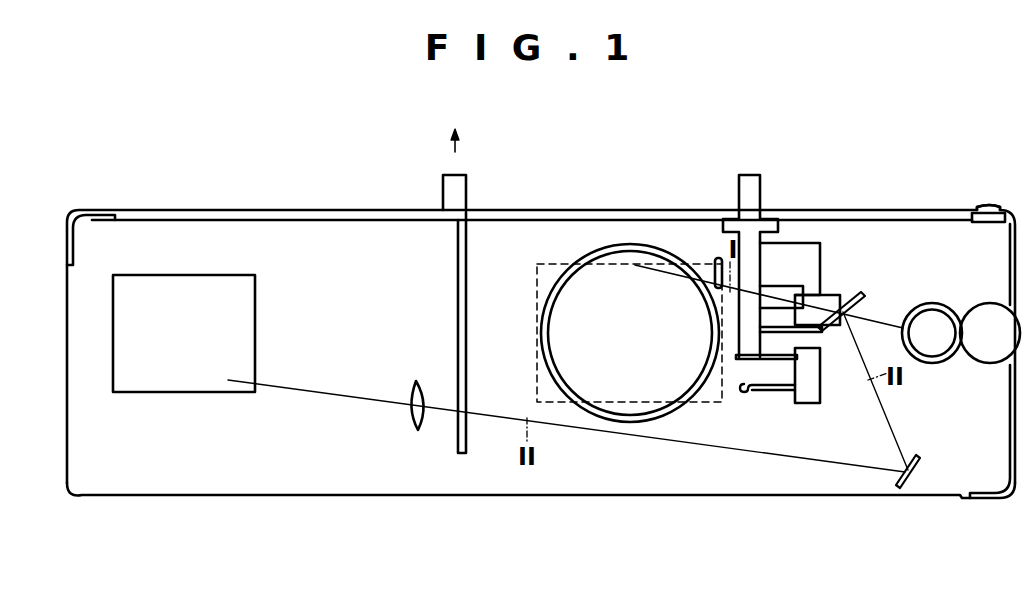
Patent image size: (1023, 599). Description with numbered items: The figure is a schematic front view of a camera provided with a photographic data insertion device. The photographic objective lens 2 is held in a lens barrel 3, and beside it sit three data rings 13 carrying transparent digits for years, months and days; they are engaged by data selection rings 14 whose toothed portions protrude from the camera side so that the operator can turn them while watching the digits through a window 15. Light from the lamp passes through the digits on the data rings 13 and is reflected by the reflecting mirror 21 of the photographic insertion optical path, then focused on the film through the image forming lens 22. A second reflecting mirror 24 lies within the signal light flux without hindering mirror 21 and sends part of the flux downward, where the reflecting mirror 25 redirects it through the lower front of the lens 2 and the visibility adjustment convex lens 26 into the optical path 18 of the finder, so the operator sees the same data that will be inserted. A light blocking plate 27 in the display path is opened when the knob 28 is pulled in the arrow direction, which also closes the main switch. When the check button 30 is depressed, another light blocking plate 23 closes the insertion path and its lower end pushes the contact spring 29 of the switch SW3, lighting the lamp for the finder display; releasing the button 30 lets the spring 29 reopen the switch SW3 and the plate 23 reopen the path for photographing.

The photographic objective lens 2 is at (615, 290).
The lens barrel 3 is at (630, 421).
The data rings 13 is at (932, 312).
The data selection rings 14 is at (990, 312).
The window 15 is at (990, 207).
The optical path of the finder 18 is at (219, 290).
The reflecting mirror 21 is at (832, 297).
The image forming lens 22 is at (717, 262).
The light blocking plate 23 is at (790, 256).
The reflecting mirror 24 is at (857, 297).
The reflecting mirror 25 is at (920, 468).
The visibility adjustment convex lens 26 is at (406, 415).
The light blocking plate 27 is at (460, 310).
The knob 28 is at (450, 183).
The contact spring 29 is at (778, 362).
The check button 30 is at (745, 182).
The switch SW3 is at (809, 396).